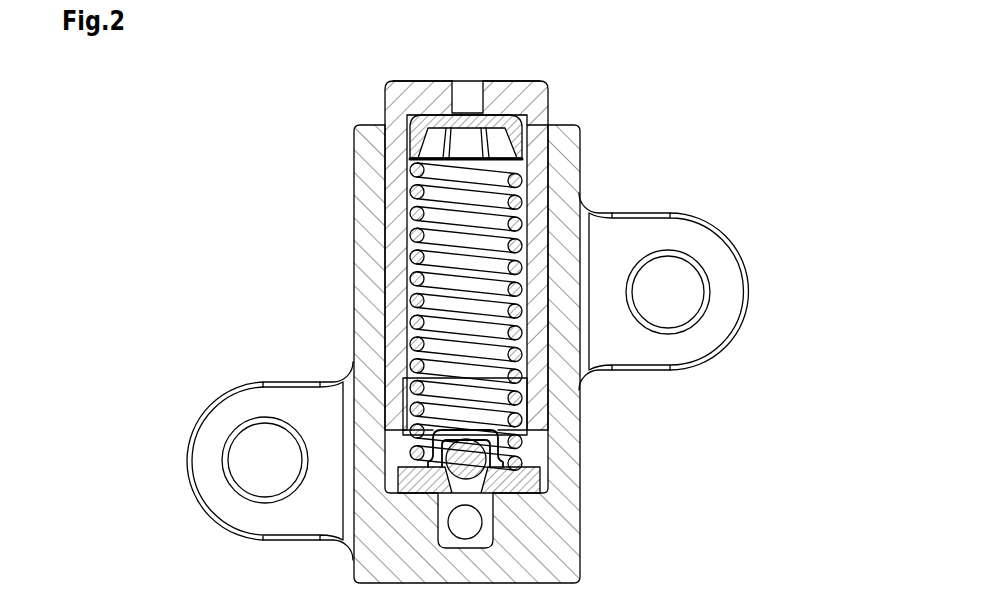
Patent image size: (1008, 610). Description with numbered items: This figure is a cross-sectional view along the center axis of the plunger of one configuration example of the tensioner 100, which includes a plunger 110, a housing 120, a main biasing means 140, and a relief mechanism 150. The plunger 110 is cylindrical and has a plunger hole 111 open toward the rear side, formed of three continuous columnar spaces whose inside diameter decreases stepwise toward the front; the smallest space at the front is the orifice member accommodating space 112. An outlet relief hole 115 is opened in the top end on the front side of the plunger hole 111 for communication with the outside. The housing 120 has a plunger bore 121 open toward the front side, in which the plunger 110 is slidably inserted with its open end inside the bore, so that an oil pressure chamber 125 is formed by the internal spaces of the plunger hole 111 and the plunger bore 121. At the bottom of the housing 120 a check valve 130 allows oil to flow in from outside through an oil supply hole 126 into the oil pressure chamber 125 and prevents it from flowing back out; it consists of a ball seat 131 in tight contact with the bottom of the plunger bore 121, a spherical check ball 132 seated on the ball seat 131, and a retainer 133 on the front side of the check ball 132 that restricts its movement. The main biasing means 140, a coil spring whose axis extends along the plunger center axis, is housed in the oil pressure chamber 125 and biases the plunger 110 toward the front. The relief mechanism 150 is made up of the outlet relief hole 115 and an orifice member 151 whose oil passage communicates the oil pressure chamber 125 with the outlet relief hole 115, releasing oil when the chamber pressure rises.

The tensioner 100 is at (522, 78).
The plunger 110 is at (392, 213).
The plunger hole 111 is at (530, 197).
The orifice member accommodating space 112 is at (548, 127).
The outlet relief hole 115 is at (456, 95).
The housing 120 is at (362, 279).
The plunger bore 121 is at (590, 243).
The oil pressure chamber 125 is at (462, 305).
The oil supply hole 126 is at (468, 520).
The check valve 130 is at (709, 403).
The ball seat 131 is at (512, 480).
The check ball 132 is at (473, 458).
The retainer 133 is at (500, 423).
The main biasing means 140 is at (410, 343).
The relief mechanism 150 is at (207, 30).
The orifice member 151 is at (417, 132).